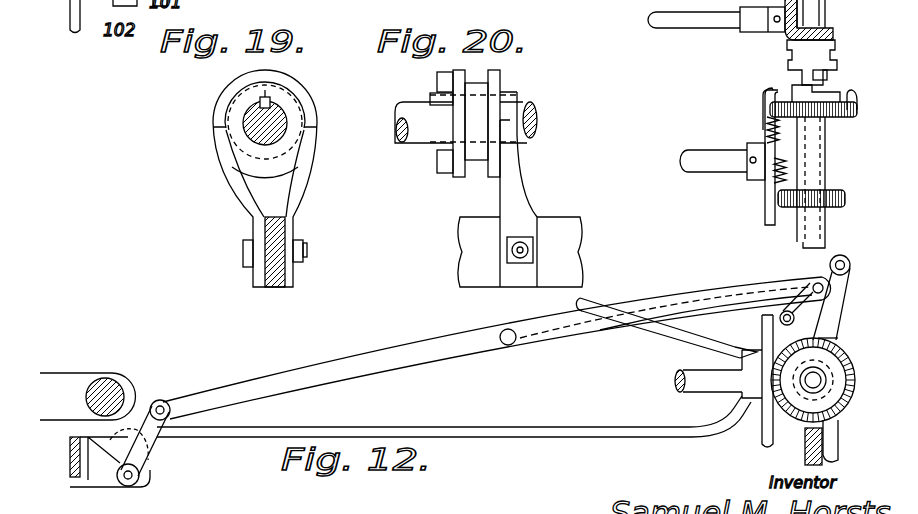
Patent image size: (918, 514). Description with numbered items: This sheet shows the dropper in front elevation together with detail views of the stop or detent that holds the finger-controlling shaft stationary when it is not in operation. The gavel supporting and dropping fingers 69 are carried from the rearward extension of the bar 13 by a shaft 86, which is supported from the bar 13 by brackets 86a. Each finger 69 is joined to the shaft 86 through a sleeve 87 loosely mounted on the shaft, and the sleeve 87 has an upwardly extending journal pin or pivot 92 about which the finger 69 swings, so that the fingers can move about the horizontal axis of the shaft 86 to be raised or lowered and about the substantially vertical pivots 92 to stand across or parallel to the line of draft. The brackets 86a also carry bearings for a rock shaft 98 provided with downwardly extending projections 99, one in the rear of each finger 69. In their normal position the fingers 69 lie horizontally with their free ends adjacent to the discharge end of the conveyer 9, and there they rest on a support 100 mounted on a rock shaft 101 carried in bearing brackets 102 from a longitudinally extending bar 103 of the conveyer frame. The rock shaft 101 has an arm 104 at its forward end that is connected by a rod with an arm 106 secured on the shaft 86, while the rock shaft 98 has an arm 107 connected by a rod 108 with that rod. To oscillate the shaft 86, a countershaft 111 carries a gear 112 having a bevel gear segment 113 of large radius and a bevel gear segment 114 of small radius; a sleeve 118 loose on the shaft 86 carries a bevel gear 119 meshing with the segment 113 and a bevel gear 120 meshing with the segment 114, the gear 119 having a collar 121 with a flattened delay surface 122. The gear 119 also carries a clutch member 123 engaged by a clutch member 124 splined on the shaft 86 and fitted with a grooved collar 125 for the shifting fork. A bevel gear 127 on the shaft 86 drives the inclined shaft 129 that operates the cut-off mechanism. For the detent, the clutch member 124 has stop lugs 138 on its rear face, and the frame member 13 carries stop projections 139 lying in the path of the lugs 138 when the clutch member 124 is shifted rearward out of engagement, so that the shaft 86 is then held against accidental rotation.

In FIG. 12, the conveyer 9 is at (71, 373).
In FIG. 19, the bar 13 is at (263, 230).
In FIG. 20, the bar 13 is at (583, 233).
In FIG. 12, the bar 13 is at (805, 457).
In FIG. 12, the gavel supporting and dropping finger 69 is at (417, 427).
In FIG. 20, the shaft 86 is at (512, 118).
In FIG. 12, the shaft 86 is at (777, 410).
In FIG. 12, the bracket 86a is at (838, 452).
In FIG. 12, the sleeve 87 is at (776, 418).
In FIG. 12, the journal pin or pivot 92 is at (835, 341).
In FIG. 12, the rock shaft 98 is at (707, 304).
In FIG. 12, the projection 99 is at (782, 330).
In FIG. 12, the support 100 is at (126, 435).
In FIG. 12, the rock shaft 101 is at (139, 478).
In FIG. 12, the bearing bracket 102 is at (103, 476).
In FIG. 12, the longitudinally extending bar 103 is at (73, 476).
In FIG. 12, the arm 104 is at (158, 441).
In FIG. 12, the arm 106 is at (837, 283).
In FIG. 12, the arm 107 is at (785, 311).
In FIG. 12, the rod 108 is at (710, 308).
In FIG. 12, the countershaft 111 is at (708, 386).
In FIG. 12, the gear 112 is at (770, 449).
In FIG. 12, the bevel gear segment 113 is at (766, 128).
In FIG. 12, the bevel gear segment 114 is at (777, 181).
In FIG. 12, the sleeve 118 is at (827, 161).
In FIG. 12, the bevel gear 119 is at (777, 433).
In FIG. 12, the bevel gear 120 is at (848, 412).
In FIG. 12, the collar 121 is at (828, 120).
In FIG. 12, the flattened delay surface 122 is at (773, 90).
In FIG. 12, the clutch member 123 is at (795, 88).
In FIG. 19, the clutch member 124 is at (307, 92).
In FIG. 20, the clutch member 124 is at (438, 82).
In FIG. 12, the clutch member 124 is at (827, 77).
In FIG. 20, the grooved collar 125 is at (478, 163).
In FIG. 12, the grooved collar 125 is at (837, 58).
In FIG. 12, the bevel gear 127 is at (828, 23).
In FIG. 12, the shaft 129 is at (585, 303).
In FIG. 19, the stop lug 138 is at (218, 108).
In FIG. 20, the stop lug 138 is at (513, 118).
In FIG. 12, the stop lug 138 is at (827, 38).
In FIG. 19, the stop projection 139 is at (240, 200).
In FIG. 20, the stop projection 139 is at (513, 200).